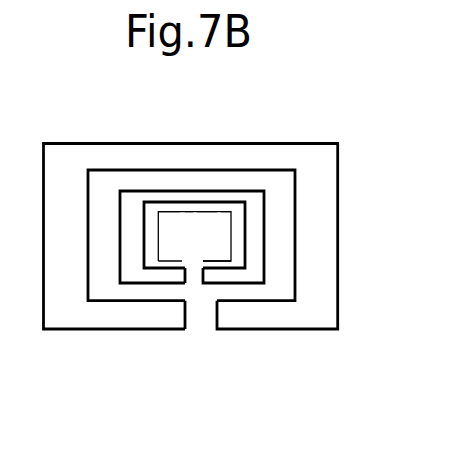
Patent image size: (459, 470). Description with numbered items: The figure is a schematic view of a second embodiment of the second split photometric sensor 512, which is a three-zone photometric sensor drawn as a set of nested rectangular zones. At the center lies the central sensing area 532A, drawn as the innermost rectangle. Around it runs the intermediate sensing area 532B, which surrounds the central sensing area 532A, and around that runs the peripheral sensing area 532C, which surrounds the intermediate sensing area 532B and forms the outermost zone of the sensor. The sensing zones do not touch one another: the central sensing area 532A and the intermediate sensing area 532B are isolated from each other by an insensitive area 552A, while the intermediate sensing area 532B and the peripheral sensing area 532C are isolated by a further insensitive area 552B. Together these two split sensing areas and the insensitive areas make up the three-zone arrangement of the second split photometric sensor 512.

The second split photometric sensor 512 is at (140, 137).
The central sensing area 532A is at (197, 250).
The intermediate sensing area 532B is at (256, 268).
The peripheral sensing area 532C is at (328, 267).
The insensitive area 552A is at (234, 255).
The insensitive area 552B is at (285, 271).